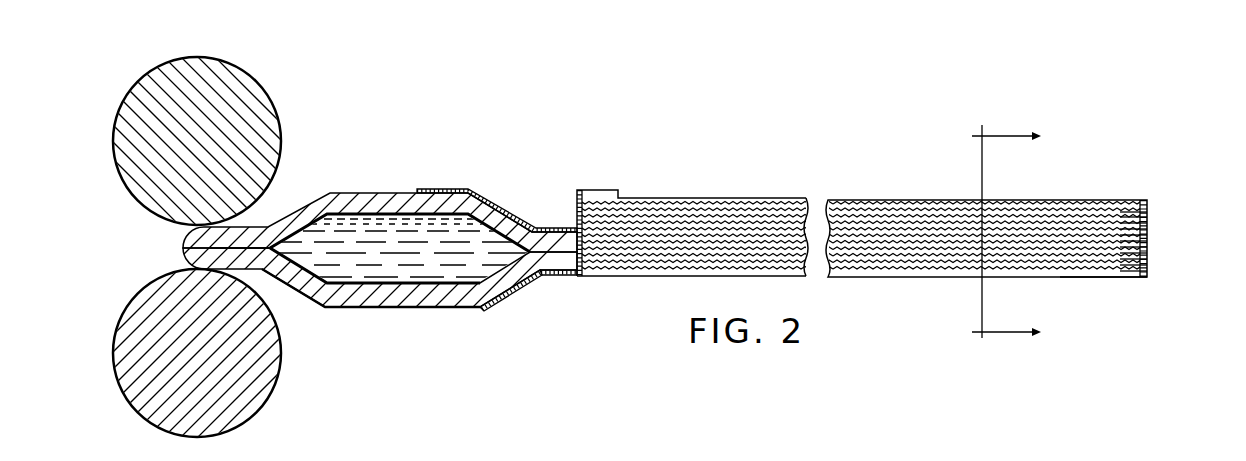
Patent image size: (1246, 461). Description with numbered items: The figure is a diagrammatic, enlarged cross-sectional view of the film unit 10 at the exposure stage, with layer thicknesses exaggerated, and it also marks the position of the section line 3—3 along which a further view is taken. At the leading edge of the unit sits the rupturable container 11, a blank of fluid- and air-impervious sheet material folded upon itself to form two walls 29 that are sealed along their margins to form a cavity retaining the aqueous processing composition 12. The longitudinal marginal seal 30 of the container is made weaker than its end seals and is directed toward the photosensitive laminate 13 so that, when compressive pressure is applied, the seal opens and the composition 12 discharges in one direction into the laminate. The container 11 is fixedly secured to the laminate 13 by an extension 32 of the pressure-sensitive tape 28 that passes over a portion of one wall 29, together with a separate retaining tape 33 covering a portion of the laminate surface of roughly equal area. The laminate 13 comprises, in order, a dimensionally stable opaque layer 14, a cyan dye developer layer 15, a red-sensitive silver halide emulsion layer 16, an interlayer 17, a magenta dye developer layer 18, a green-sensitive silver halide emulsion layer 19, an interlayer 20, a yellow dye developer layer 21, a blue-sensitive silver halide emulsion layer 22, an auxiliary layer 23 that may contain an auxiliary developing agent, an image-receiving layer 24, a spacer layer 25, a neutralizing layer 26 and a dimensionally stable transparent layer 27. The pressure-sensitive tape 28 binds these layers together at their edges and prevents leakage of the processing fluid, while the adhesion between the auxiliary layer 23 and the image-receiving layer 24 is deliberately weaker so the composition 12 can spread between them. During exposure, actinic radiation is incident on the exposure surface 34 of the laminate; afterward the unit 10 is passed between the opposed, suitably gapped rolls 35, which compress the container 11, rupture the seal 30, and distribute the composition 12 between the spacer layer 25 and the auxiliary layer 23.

The section line 3— 3 is at (1013, 234).
The film unit 10 is at (592, 158).
The rupturable container 11 is at (328, 190).
The aqueous processing composition 12 is at (393, 232).
The photosensitive laminate 13 is at (683, 193).
The dimensionally stable opaque layer 14 is at (1147, 207).
The cyan dye developer layer 15 is at (1147, 212).
The red-sensitive silver halide emulsion layer 16 is at (1147, 217).
The interlayer 17 is at (1147, 223).
The magenta dye developer layer 18 is at (1147, 229).
The green-sensitive silver halide emulsion layer 19 is at (1147, 235).
The interlayer 20 is at (1147, 241).
The yellow dye developer layer 21 is at (1147, 247).
The blue-sensitive silver halide emulsion layer 22 is at (1147, 253).
The auxiliary layer 23 is at (1147, 259).
The image-receiving layer 24 is at (1147, 265).
The spacer layer 25 is at (1147, 271).
The neutralizing layer 26 is at (1146, 280).
The dimensionally stable transparent layer 27 is at (1108, 279).
The pressure-sensitive tape 28 is at (612, 278).
The walls 29 is at (353, 200).
The longitudinal marginal seal 30 is at (550, 275).
The extension of tape 32 is at (517, 290).
The retaining tape 33 is at (492, 201).
The exposure surface 34 is at (692, 278).
The rolls 35 is at (257, 93).